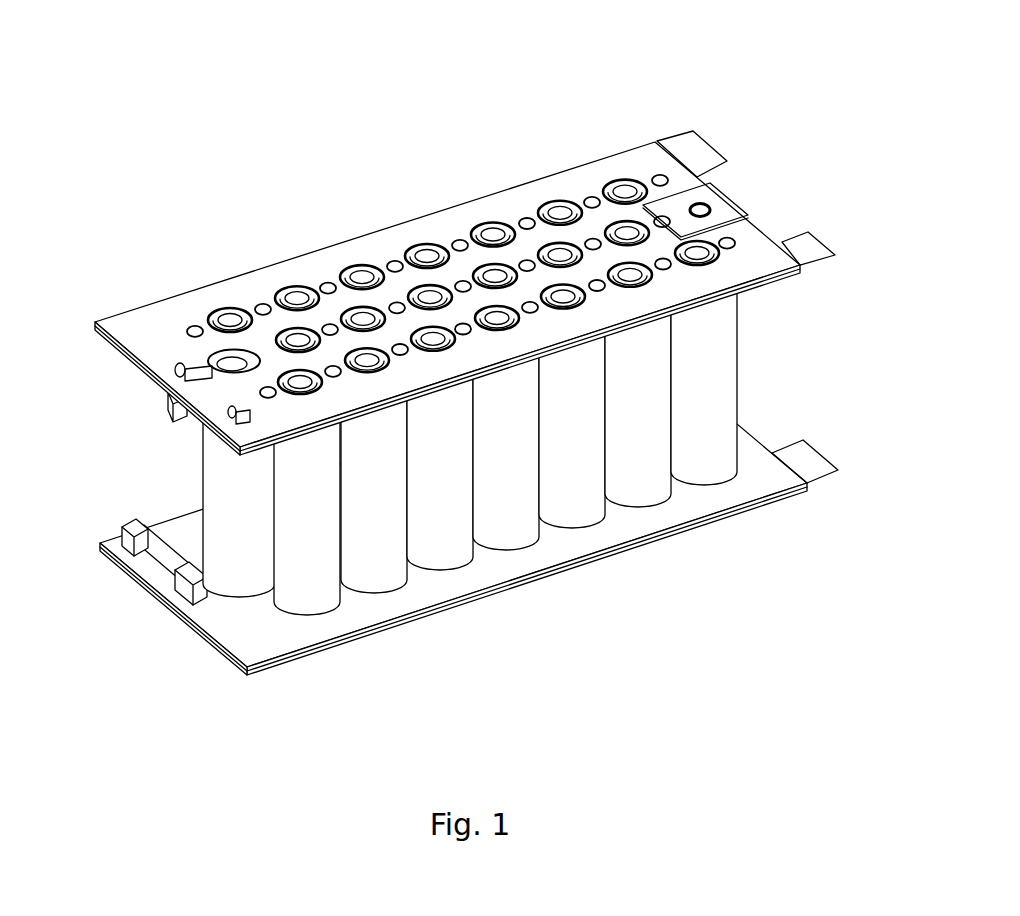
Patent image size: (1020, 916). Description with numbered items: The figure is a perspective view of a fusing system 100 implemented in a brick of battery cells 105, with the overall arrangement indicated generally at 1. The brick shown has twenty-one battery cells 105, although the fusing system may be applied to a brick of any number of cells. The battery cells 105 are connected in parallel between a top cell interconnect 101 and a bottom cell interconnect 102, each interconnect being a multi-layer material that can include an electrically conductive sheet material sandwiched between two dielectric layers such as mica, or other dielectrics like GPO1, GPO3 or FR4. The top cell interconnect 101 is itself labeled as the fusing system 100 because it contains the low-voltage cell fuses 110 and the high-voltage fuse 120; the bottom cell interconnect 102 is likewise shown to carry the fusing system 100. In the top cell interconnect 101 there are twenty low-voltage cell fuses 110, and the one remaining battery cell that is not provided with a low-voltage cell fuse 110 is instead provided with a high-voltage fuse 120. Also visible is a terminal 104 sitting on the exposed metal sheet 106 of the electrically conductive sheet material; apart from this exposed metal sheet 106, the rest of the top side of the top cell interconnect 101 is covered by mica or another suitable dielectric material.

The battery module 1 is at (177, 93).
The fusing system 100 is at (83, 290).
The top cell interconnect 101 is at (150, 343).
The bottom cell interconnect 102 is at (243, 632).
The terminal 104 is at (712, 203).
The battery cells 105 is at (693, 378).
The exposed metal sheet 106 is at (665, 207).
The low-voltage cell fuses 110 is at (732, 233).
The high-voltage fuse 120 is at (158, 555).